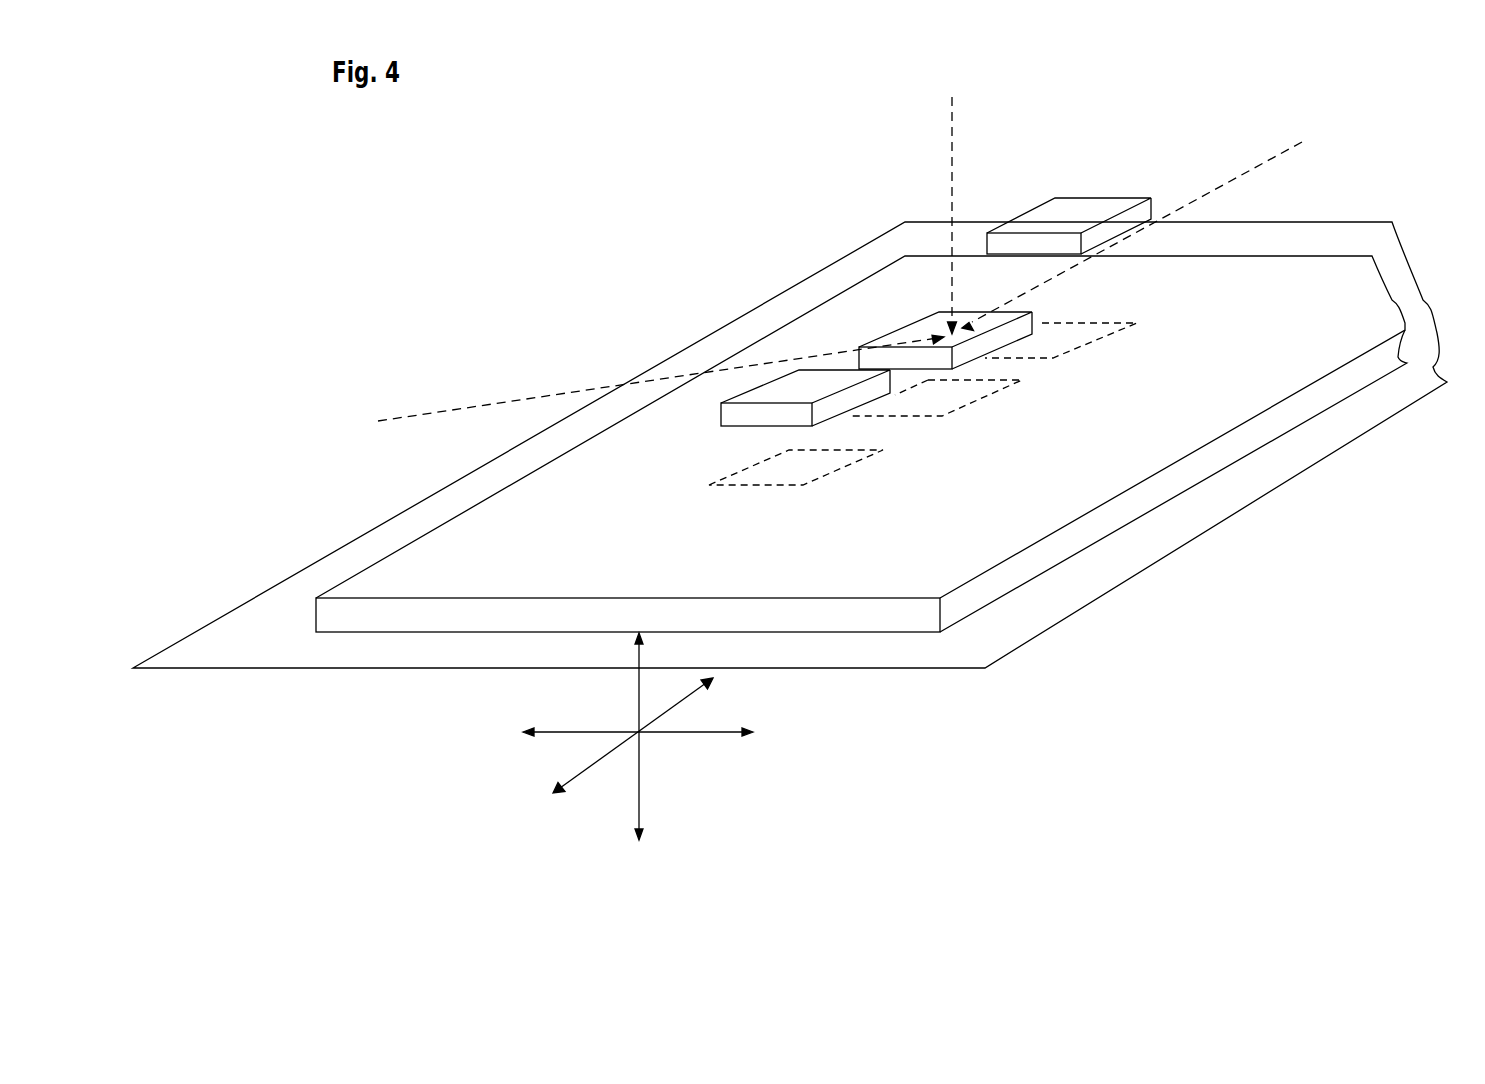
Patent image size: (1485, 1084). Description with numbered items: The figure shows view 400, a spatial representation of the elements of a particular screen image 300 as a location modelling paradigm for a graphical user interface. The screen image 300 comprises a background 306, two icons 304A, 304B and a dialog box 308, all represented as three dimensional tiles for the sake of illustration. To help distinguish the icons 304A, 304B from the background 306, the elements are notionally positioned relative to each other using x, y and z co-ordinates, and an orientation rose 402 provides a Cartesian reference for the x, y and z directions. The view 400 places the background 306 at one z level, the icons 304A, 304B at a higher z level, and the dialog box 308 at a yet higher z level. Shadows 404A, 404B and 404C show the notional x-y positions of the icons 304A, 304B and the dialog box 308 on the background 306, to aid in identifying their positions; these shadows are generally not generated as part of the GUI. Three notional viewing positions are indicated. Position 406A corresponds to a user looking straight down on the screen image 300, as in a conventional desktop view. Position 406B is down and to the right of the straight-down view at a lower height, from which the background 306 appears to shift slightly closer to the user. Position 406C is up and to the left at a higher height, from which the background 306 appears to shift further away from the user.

The screen image 300 is at (905, 657).
The background 306 is at (987, 563).
The dialog box 308 is at (1065, 225).
The icon 304A is at (733, 414).
The icon 304B is at (892, 338).
The view 400 is at (678, 101).
The orientation rose 402 is at (743, 752).
The shadow 404A is at (796, 488).
The shadow 404B is at (938, 392).
The shadow 404C is at (1047, 340).
The position 406A is at (942, 190).
The position 406B is at (625, 388).
The position 406C is at (1166, 224).